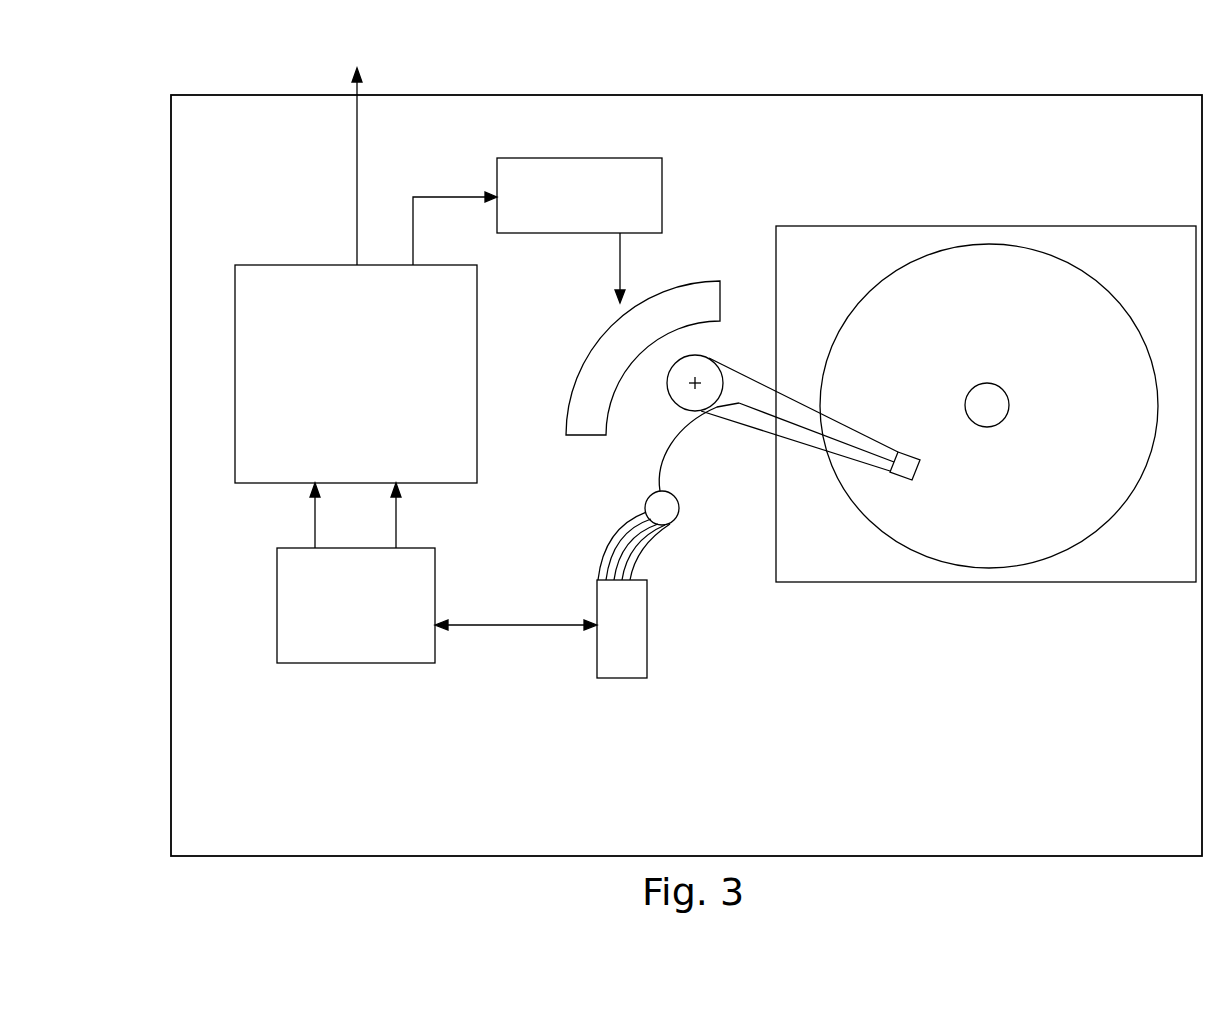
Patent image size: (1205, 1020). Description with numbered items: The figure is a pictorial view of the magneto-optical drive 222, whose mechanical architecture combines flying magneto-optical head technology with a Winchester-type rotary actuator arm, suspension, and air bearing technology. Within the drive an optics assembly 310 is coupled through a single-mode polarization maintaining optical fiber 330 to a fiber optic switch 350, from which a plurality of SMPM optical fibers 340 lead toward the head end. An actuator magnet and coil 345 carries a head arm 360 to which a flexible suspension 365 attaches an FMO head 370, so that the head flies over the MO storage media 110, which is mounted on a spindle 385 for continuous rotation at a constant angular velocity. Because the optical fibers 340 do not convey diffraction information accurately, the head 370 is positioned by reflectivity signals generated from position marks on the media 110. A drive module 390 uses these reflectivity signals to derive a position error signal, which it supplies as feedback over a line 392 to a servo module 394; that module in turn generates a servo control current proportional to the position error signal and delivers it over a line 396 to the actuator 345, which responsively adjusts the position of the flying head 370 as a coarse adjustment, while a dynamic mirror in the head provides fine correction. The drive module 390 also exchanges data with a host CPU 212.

The MO storage media 110 is at (1098, 308).
The host CPU 212 is at (354, 154).
The magneto-optical drive 222 is at (1078, 881).
The optics assembly 310 is at (368, 663).
The SMPM optical fiber 330 is at (497, 625).
The SMPM optical fibers 340 is at (640, 568).
The actuator magnet and coil 345 is at (656, 287).
The fiber optic switch 350 is at (647, 620).
The head arm 360 is at (825, 418).
The suspension 365 is at (858, 437).
The FMO head 370 is at (920, 462).
The spindle 385 is at (1010, 405).
The drive module 390 is at (252, 265).
The line 392 is at (416, 196).
The servo module 394 is at (662, 160).
The line 396 is at (618, 258).